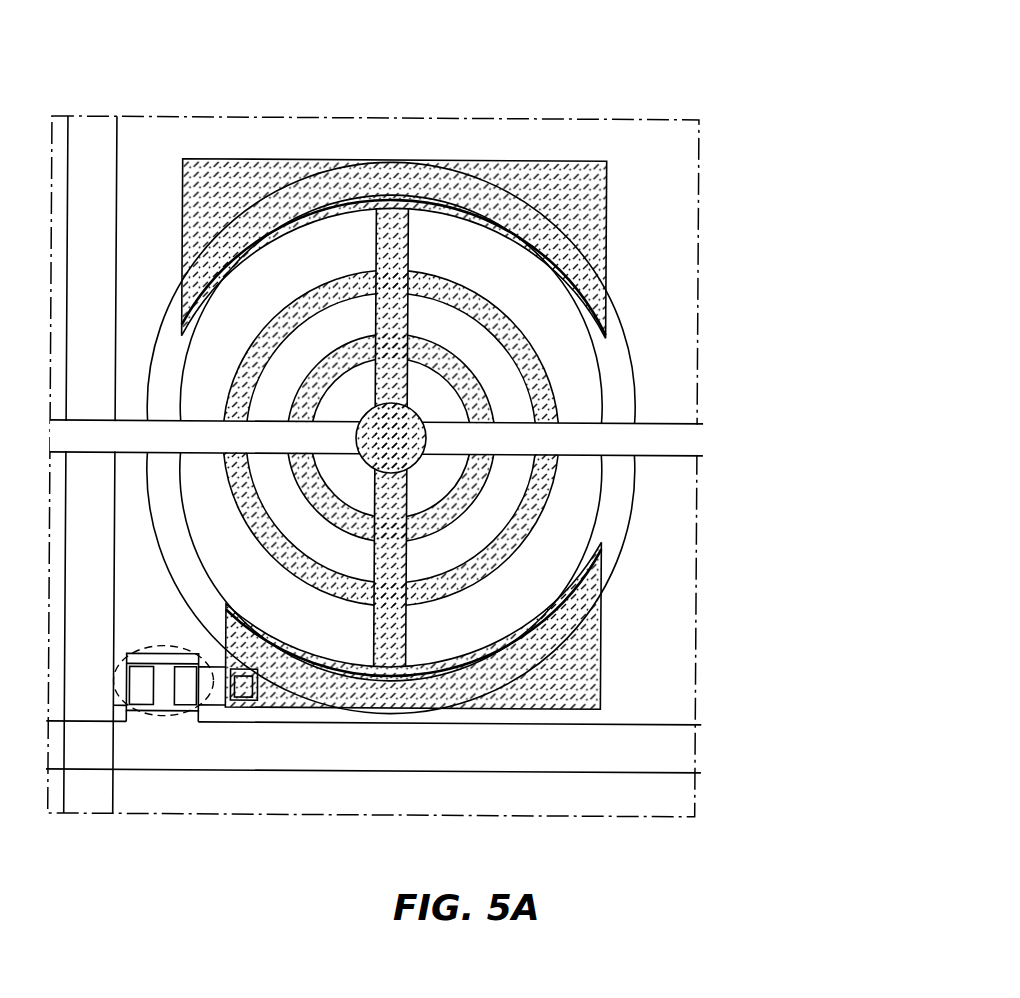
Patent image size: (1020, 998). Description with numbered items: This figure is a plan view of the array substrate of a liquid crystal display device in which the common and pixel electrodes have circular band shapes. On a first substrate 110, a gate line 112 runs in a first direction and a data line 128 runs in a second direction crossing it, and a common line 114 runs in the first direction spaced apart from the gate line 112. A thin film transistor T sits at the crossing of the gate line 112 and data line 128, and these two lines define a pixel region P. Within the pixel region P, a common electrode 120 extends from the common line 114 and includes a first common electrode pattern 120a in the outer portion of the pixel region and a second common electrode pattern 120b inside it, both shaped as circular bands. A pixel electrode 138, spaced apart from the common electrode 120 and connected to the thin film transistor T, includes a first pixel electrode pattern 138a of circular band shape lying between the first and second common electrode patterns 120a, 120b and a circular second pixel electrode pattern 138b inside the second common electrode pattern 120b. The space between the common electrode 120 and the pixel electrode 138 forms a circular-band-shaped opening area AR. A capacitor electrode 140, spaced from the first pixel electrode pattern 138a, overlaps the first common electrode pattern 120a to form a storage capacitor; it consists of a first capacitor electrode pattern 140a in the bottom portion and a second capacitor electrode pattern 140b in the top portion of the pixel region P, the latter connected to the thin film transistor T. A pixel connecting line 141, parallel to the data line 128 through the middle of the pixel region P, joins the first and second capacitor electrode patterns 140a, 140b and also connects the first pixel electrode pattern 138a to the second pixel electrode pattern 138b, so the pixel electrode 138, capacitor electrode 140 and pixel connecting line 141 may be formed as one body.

The first substrate 110 is at (150, 117).
The gate line 112 is at (703, 723).
The common line 114 is at (703, 422).
The common electrode 120 is at (377, 337).
The first common electrode pattern 120a is at (425, 337).
The second common electrode pattern 120b is at (398, 440).
The data line 128 is at (114, 816).
The pixel electrode 138 is at (421, 362).
The first pixel electrode pattern 138a is at (462, 254).
The second pixel electrode pattern 138b is at (604, 200).
The capacitor electrode 140 is at (550, 435).
The first capacitor electrode pattern 140a is at (527, 625).
The second capacitor electrode pattern 140b is at (593, 243).
The pixel connecting line 141 is at (393, 560).
The pixel region P is at (132, 208).
The thin film transistor T is at (163, 718).
The opening area AR is at (345, 392).